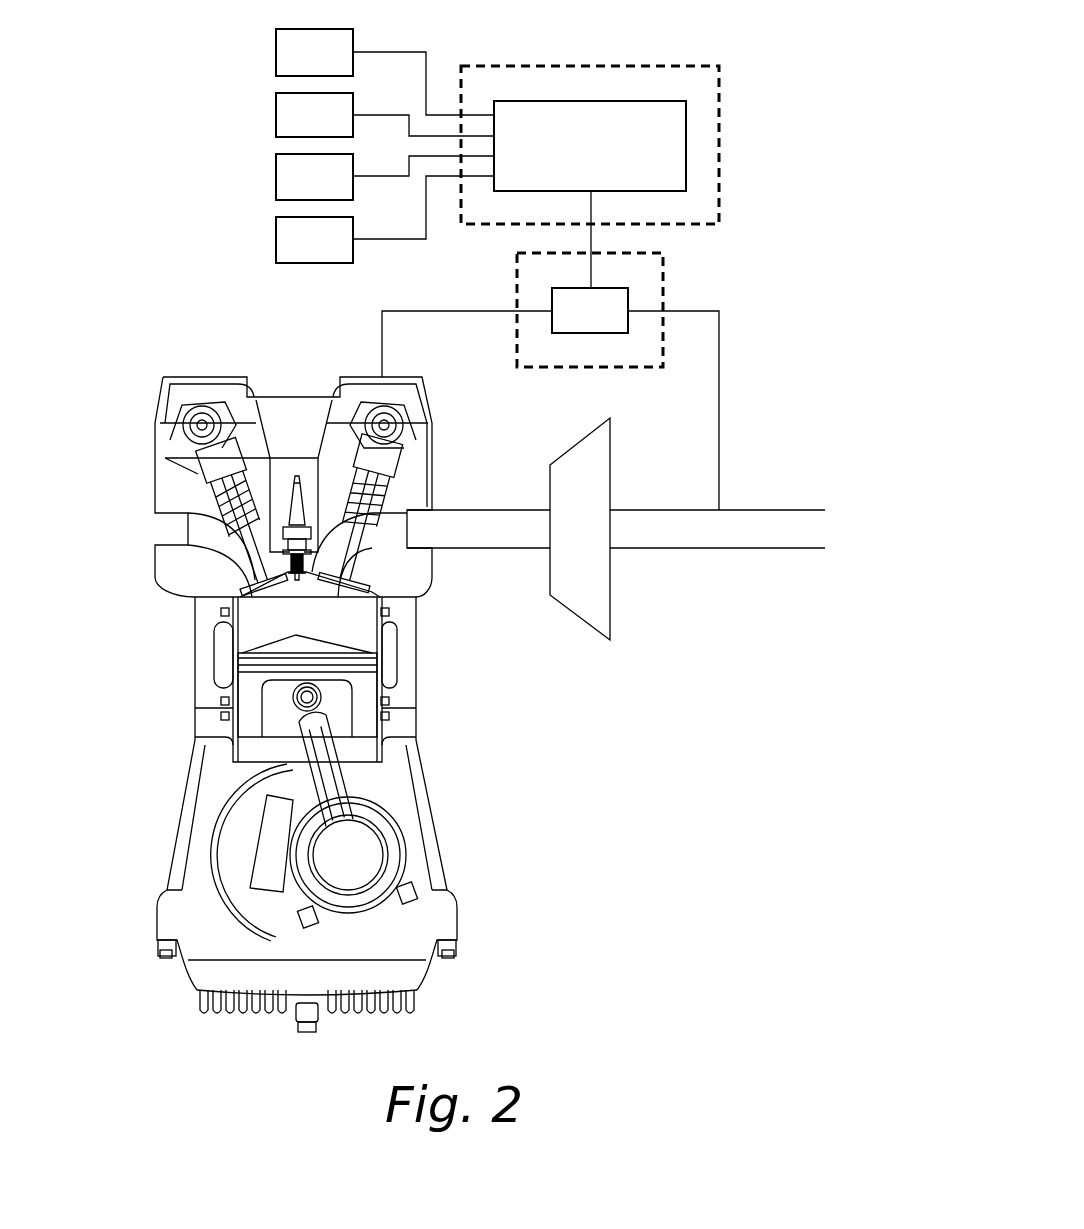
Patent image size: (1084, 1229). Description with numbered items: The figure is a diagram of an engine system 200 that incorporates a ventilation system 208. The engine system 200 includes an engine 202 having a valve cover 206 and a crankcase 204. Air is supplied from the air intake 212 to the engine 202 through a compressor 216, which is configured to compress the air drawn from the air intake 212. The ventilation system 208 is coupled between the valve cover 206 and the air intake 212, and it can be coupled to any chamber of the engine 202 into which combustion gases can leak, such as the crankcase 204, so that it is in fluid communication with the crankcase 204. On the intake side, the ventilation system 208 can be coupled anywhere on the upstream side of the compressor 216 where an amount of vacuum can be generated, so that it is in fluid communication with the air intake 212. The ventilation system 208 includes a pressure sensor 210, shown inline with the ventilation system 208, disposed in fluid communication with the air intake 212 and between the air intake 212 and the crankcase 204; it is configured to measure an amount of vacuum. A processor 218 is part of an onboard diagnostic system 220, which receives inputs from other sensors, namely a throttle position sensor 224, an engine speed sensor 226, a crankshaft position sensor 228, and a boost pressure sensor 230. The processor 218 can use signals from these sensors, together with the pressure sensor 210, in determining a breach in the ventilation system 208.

The engine system 200 is at (166, 303).
The engine 202 is at (165, 890).
The crankcase 204 is at (380, 923).
The valve cover 206 is at (213, 376).
The ventilation system 208 is at (540, 334).
The pressure sensor 210 is at (568, 333).
The air intake 212 is at (745, 549).
The compressor 216 is at (575, 616).
The processor 218 is at (686, 168).
The onboard diagnostic (OBD) system 220 is at (646, 145).
The throttle position sensor 224 is at (276, 109).
The engine speed sensor 226 is at (276, 48).
The crankshaft position sensor 228 is at (276, 172).
The boost pressure sensor 230 is at (276, 234).